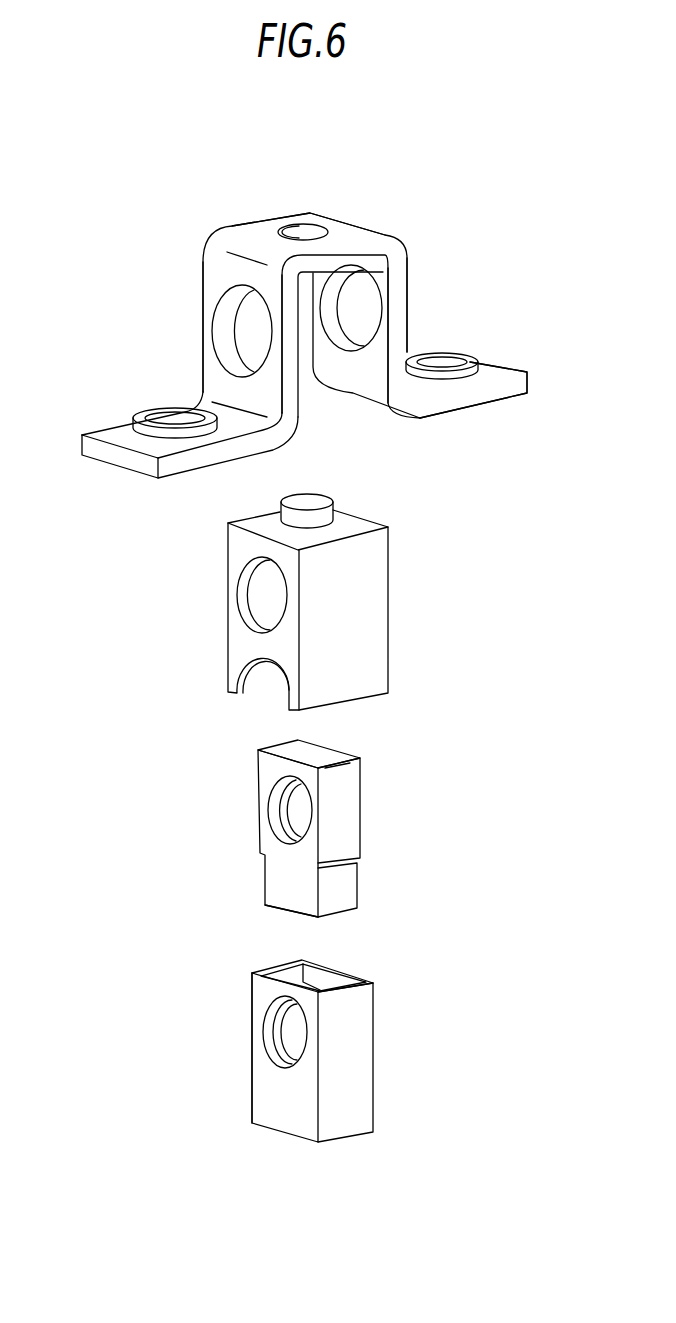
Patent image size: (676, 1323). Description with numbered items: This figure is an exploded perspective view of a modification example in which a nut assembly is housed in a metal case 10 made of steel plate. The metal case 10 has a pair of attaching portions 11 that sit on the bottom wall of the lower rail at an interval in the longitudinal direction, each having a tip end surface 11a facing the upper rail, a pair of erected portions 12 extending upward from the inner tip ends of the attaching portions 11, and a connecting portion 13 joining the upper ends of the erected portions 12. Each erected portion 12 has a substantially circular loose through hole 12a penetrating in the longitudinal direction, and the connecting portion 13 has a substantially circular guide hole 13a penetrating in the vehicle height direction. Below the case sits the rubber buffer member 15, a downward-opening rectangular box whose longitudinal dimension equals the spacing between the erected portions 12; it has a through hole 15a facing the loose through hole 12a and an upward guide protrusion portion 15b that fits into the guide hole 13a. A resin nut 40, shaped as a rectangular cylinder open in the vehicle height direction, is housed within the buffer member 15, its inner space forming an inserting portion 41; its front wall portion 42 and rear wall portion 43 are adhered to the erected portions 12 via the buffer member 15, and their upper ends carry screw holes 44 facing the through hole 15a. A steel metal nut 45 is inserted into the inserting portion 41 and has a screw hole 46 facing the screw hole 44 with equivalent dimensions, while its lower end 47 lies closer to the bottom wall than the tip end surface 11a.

The metal case 10 is at (386, 201).
The attaching portions 11 is at (105, 455).
The tip end surface 11a is at (113, 418).
The erected portions 12 is at (203, 297).
The loose through hole 12a is at (224, 343).
The connecting portion 13 is at (233, 228).
The guide hole 13a is at (297, 225).
The buffer member 15 is at (365, 615).
The through hole 15a is at (248, 608).
The guide protrusion portion 15b is at (293, 505).
The resin nut 40 is at (403, 991).
The inserting portion 41 is at (323, 966).
The front wall portion 42 is at (262, 990).
The rear wall portion 43 is at (343, 970).
The screw hole 44 is at (280, 1048).
The metal nut 45 is at (401, 739).
The screw hole 46 is at (283, 829).
The lower end 47 is at (277, 908).